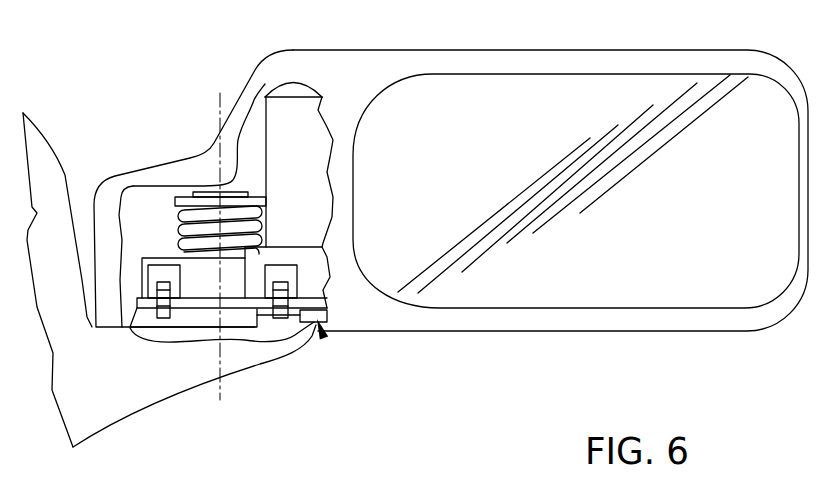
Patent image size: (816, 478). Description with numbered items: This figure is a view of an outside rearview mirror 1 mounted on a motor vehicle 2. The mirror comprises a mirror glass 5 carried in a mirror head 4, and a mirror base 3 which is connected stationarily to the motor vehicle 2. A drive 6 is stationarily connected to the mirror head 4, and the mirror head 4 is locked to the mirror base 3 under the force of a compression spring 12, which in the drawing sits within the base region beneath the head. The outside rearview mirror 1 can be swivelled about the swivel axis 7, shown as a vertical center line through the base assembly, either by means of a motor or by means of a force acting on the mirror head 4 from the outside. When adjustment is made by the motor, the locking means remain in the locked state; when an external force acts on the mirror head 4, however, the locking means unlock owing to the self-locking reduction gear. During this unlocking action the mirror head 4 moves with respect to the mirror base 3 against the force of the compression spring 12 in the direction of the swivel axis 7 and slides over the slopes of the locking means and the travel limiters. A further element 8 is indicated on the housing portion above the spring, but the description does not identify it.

The outside rearview mirror 1 is at (451, 212).
The motor vehicle 2 is at (117, 400).
The mirror base 3 is at (292, 357).
The mirror head 4 is at (395, 63).
The mirror glass 5 is at (567, 92).
The drive 6 is at (324, 338).
The swivel axis 7 is at (228, 362).
The stop member 8 is at (303, 130).
The compression spring 12 is at (210, 217).